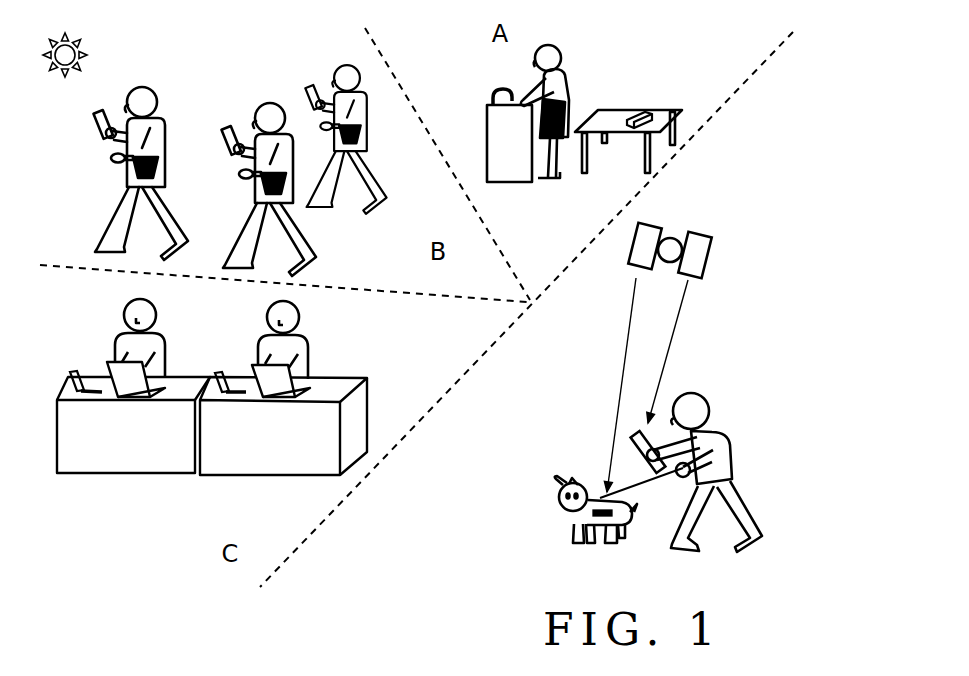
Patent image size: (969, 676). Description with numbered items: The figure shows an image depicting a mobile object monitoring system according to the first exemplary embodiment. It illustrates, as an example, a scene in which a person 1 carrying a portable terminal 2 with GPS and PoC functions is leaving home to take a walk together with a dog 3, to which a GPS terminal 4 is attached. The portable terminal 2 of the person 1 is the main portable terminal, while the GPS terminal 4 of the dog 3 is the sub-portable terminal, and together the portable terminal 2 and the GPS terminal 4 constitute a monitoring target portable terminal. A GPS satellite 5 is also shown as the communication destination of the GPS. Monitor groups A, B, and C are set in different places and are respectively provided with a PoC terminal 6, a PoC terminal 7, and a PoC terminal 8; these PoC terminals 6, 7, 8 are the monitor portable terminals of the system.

The person 1 is at (710, 403).
The portable terminal 2 is at (633, 448).
The dog 3 is at (560, 518).
The GPS terminal 4 is at (597, 518).
The GPS satellite 5 is at (700, 230).
The PoC terminal 6 is at (633, 110).
The PoC terminal 7 is at (102, 110).
The PoC terminal 8 is at (220, 395).